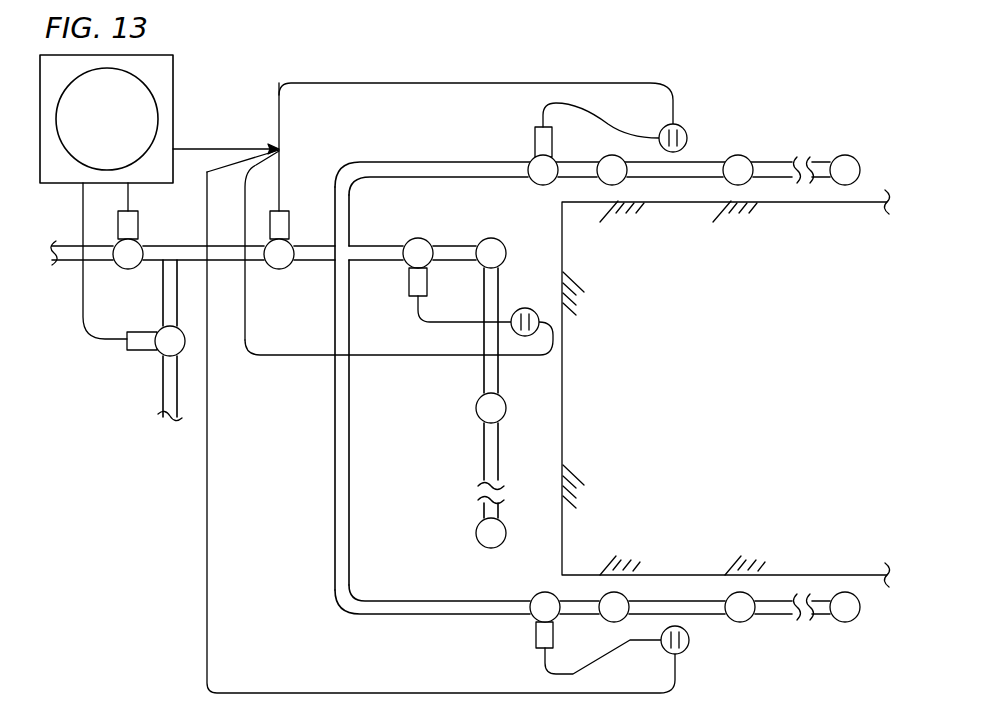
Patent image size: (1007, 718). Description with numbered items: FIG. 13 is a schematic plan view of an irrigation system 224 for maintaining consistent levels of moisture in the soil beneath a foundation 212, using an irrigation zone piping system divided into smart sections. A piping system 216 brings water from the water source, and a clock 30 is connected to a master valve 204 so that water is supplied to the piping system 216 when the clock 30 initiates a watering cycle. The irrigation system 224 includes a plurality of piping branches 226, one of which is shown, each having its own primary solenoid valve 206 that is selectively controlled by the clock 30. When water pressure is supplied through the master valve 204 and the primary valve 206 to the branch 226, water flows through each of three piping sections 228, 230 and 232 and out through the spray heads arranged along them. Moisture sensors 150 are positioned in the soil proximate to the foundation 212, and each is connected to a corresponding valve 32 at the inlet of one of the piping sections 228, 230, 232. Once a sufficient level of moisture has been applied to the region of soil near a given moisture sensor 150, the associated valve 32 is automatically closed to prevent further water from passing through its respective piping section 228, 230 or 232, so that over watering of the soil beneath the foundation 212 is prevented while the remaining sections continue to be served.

The clock 30 is at (173, 98).
The master valve 204 is at (142, 244).
The piping system 216 is at (170, 254).
The primary solenoid valve 206 is at (163, 355).
The piping branch 226 is at (167, 388).
The piping section 228 is at (470, 163).
The piping section 230 is at (376, 248).
The piping section 232 is at (410, 603).
The valve 32 is at (538, 183).
The moisture sensor 150 is at (688, 134).
The foundation 212 is at (773, 204).
The irrigation system 224 is at (329, 414).